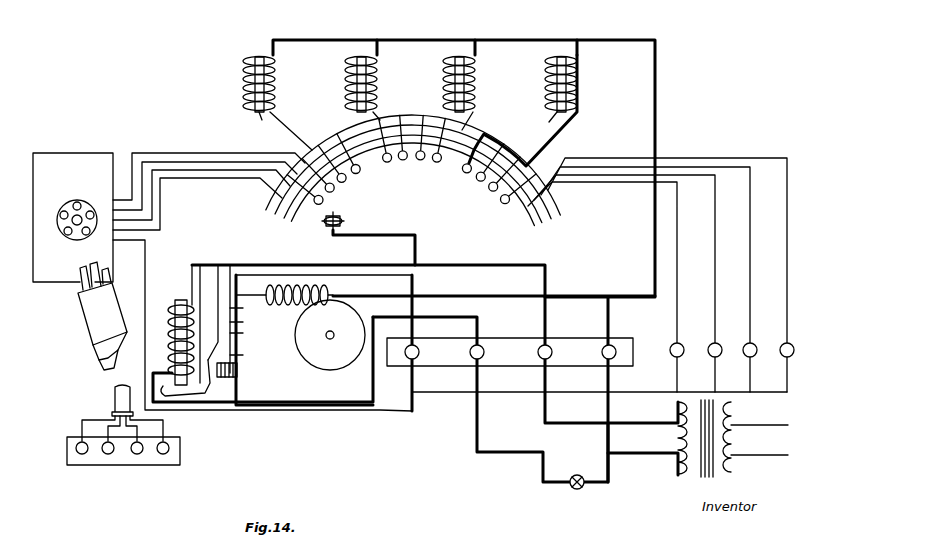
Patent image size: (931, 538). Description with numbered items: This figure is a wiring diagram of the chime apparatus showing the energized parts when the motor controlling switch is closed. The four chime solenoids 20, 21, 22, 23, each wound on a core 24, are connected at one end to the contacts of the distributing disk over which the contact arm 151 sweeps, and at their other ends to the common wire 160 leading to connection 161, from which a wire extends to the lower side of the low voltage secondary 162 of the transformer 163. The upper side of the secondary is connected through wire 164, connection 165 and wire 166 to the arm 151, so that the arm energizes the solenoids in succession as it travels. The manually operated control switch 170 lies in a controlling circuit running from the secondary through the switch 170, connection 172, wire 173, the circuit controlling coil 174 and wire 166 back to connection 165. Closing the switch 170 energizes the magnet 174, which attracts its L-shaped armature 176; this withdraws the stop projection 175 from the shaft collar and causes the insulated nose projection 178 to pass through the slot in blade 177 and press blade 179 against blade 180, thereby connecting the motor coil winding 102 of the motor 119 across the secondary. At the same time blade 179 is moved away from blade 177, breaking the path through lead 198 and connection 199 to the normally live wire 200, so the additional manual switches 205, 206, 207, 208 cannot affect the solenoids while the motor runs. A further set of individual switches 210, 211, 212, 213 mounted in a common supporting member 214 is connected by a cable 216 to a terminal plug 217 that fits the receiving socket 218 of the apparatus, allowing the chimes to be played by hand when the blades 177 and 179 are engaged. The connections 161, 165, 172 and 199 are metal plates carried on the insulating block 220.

The common wire 160 is at (637, 40).
The solenoid 23 is at (266, 67).
The solenoid 22 is at (366, 76).
The solenoid 21 is at (464, 76).
The solenoid 20 is at (566, 76).
The coil core 24 is at (401, 123).
The receiving socket 218 is at (63, 205).
The terminal plug 217 is at (88, 312).
The cable 216 is at (106, 366).
The contact arm 151 is at (389, 232).
The wire 166 is at (432, 266).
The circuit controlling coil 174 is at (168, 330).
The blade 180 is at (250, 308).
The blade 179 is at (250, 321).
The insulated nose projection 178 is at (250, 334).
The blade 177 is at (250, 354).
The armature 176 is at (195, 332).
The stop projection 175 is at (175, 405).
The wire 173 is at (356, 404).
The motor coil winding 102 is at (296, 306).
The motor 119 is at (330, 335).
The lead 198 is at (414, 308).
The normally live wire 200 is at (412, 410).
The insulating block 220 is at (510, 353).
The connection 199 is at (419, 347).
The connection 172 is at (483, 346).
The connection 165 is at (550, 346).
The connection 161 is at (615, 346).
The switch 205 is at (679, 344).
The switch 206 is at (718, 344).
The switch 207 is at (753, 344).
The switch 208 is at (790, 344).
The control switch 170 is at (573, 488).
The low voltage secondary 162 is at (676, 474).
The wire 164 is at (663, 438).
The transformer 163 is at (712, 452).
The common supporting member 214 is at (180, 451).
The individual switch 210 is at (80, 455).
The individual switch 211 is at (107, 455).
The individual switch 212 is at (138, 455).
The individual switch 213 is at (165, 455).